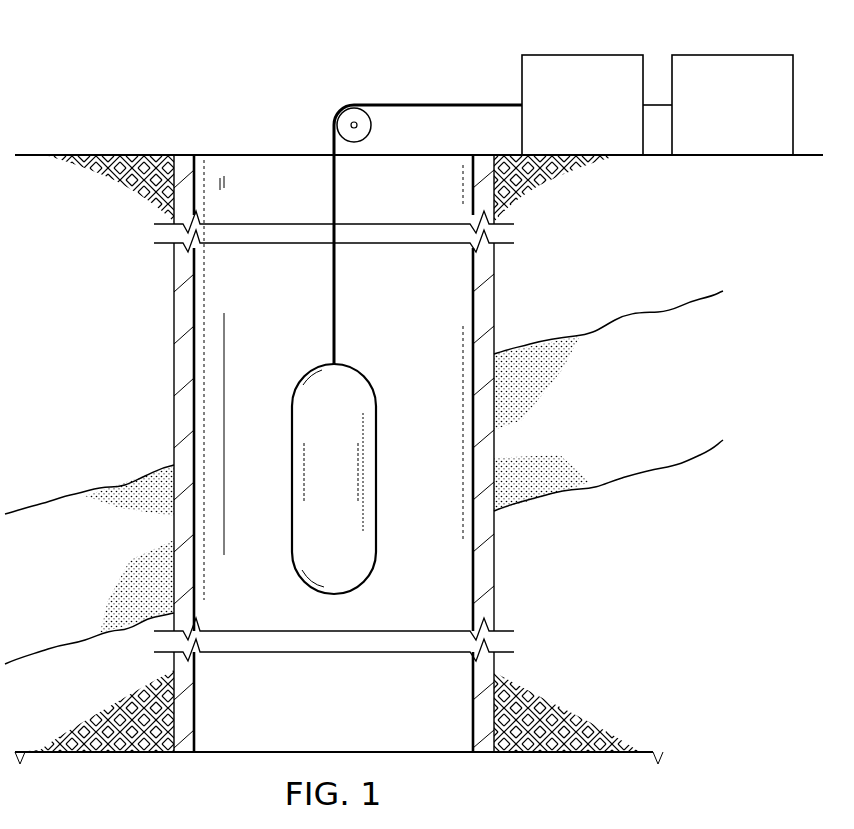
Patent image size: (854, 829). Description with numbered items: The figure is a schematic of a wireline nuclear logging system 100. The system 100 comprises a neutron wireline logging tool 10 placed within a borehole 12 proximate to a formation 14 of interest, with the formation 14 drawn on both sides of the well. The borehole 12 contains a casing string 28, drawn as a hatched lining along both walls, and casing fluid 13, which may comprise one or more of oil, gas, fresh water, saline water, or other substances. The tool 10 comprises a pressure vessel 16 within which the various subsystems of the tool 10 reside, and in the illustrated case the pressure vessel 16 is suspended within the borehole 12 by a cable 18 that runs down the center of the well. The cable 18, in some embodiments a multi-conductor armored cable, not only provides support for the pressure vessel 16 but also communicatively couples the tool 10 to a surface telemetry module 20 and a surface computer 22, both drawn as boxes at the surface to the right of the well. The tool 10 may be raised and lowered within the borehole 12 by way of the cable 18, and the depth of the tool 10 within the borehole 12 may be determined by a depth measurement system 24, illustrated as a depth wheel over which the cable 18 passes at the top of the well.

The nuclear logging system 100 is at (116, 64).
The neutron wireline logging tool 10 is at (386, 343).
The borehole 12 is at (263, 134).
The casing fluid 13 is at (415, 497).
The formation 14 is at (42, 587).
The pressure vessel 16 is at (326, 368).
The cable 18 is at (331, 192).
The surface telemetry module 20 is at (582, 55).
The surface computer 22 is at (731, 55).
The depth measurement system 24 is at (372, 128).
The casing string 28 is at (177, 314).